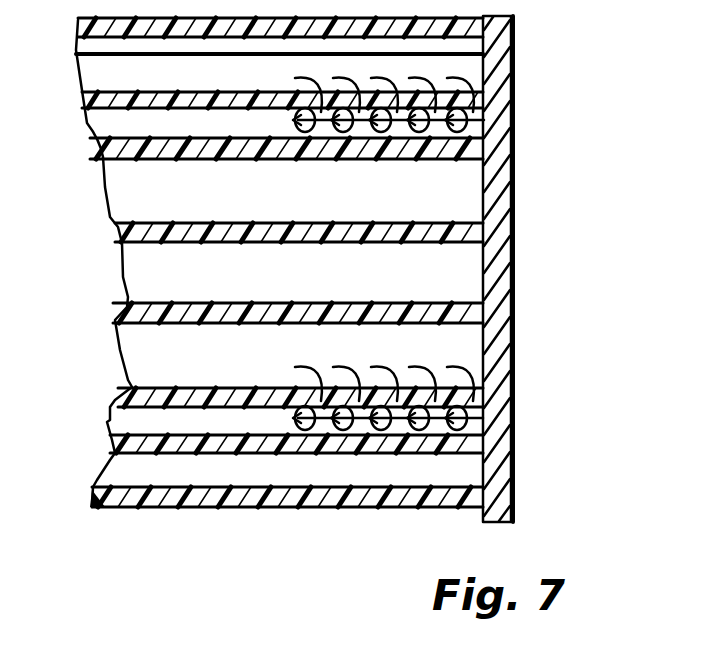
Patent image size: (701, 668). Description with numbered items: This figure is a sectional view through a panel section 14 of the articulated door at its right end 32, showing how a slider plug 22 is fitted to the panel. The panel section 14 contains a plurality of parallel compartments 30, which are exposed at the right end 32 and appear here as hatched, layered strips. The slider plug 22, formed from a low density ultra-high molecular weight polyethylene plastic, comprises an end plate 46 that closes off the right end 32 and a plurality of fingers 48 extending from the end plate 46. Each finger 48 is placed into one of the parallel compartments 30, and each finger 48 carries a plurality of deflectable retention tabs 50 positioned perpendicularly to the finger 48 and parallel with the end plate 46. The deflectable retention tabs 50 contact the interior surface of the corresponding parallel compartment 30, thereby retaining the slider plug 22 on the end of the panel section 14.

The panel section 14 is at (82, 182).
The slider plug 22 is at (514, 478).
The parallel compartments 30 is at (215, 122).
The right end 32 is at (453, 268).
The end plate 46 is at (500, 340).
The fingers 48 is at (484, 118).
The deflectable retention tabs 50 is at (425, 95).